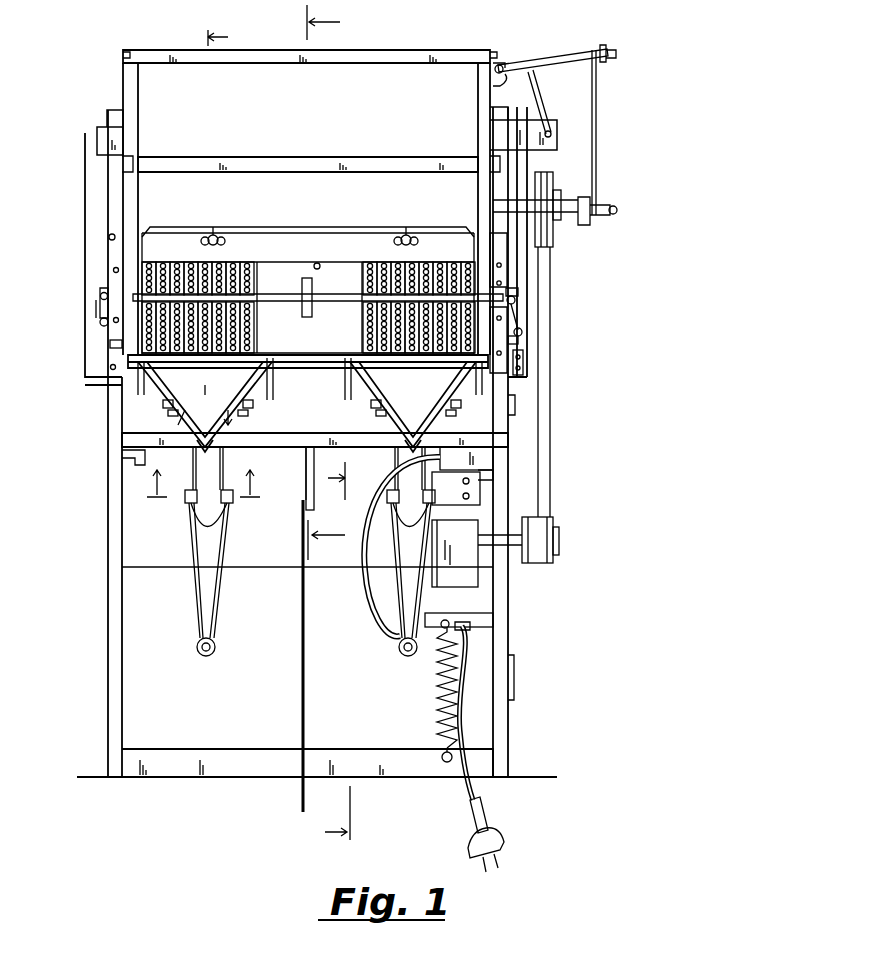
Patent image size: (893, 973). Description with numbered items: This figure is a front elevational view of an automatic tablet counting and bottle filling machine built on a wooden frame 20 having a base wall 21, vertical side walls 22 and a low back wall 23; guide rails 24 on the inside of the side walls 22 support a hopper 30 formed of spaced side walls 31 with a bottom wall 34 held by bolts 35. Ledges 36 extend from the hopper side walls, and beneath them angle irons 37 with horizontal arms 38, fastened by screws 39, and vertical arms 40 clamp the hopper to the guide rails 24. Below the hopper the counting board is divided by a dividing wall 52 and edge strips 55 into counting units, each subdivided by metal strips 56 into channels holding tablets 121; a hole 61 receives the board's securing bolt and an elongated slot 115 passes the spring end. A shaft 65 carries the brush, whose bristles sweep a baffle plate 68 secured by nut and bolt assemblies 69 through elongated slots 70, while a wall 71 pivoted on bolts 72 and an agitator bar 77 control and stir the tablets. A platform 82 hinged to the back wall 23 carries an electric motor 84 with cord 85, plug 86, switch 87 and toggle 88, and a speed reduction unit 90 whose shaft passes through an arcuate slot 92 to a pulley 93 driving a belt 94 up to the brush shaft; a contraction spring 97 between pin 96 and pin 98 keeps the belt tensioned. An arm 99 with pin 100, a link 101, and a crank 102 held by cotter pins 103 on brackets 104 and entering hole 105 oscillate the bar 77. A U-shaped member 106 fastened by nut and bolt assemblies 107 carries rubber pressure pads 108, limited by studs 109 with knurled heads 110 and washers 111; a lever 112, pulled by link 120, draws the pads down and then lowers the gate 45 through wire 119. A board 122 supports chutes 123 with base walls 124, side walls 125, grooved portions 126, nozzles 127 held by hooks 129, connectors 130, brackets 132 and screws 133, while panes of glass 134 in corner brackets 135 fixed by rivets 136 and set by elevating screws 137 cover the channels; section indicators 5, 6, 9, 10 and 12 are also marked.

The section line 5 is at (326, 281).
The section line 6 is at (221, 218).
The section line 9 is at (343, 651).
The section line 10 is at (203, 422).
The section line 12 is at (203, 493).
The frame 20 is at (99, 720).
The base wall 21 is at (180, 762).
The side walls 22 is at (108, 630).
The back wall 23 is at (125, 685).
The guide rails 24 is at (122, 460).
The hopper 30 is at (428, 40).
The side walls 31 is at (137, 58).
The bottom wall 34 is at (372, 160).
The bolts 35 is at (120, 165).
The ledges 36 is at (108, 247).
The angle irons 37 is at (490, 265).
The horizontal arms 38 is at (515, 378).
The screws 39 is at (108, 237).
The vertical arms 40 is at (512, 412).
The gate 45 is at (285, 360).
The dividing wall 52 is at (340, 268).
The edge strips 55 is at (110, 352).
The metal strips 56 is at (255, 352).
The hole 61 is at (315, 263).
The shaft 65 is at (558, 220).
The baffle plate 68 is at (332, 232).
The nut and bolt assemblies 69 is at (232, 235).
The elongated slots 70 is at (214, 230).
The wall 71 is at (363, 52).
The bolts 72 is at (123, 55).
The bar 77 is at (102, 133).
The platform 82 is at (490, 620).
The electric motor 84 is at (480, 452).
The electric cord 85 is at (470, 820).
The plug 86 is at (492, 842).
The switch 87 is at (490, 668).
The operating toggle 88 is at (514, 676).
The speed reduction unit 90 is at (480, 498).
The elongated arcuate slot 92 is at (500, 588).
The pulley 93 is at (553, 535).
The belt 94 is at (553, 465).
The pin 96 is at (446, 620).
The contraction spring 97 is at (440, 712).
The pin 98 is at (442, 758).
The arm 99 is at (585, 222).
The pin 100 is at (608, 212).
The link 101 is at (598, 95).
The crank 102 is at (560, 58).
The cotter pins 103 is at (604, 47).
The brackets 104 is at (496, 85).
The hole 105 is at (551, 133).
The U-shaped member 106 is at (325, 302).
The nut and bolt assemblies 107 is at (108, 345).
The pressure pads 108 is at (445, 270).
The studs 109 is at (100, 325).
The knurled heads 110 is at (98, 290).
The washers 111 is at (98, 298).
The lever 112 is at (304, 505).
The elongated slot 115 is at (314, 295).
The wire 119 is at (305, 480).
The link 120 is at (300, 688).
The tablets 121 is at (185, 262).
The board 122 is at (283, 447).
The chutes 123 is at (281, 394).
The base wall 124 is at (455, 380).
The side walls 125 is at (150, 385).
The grooved portion 126 is at (196, 460).
The nozzles 127 is at (220, 622).
The hooks 129 is at (185, 500).
The connector 130 is at (212, 448).
The brackets 132 is at (253, 404).
The screws 133 is at (248, 413).
The panes of glass 134 is at (270, 270).
The corner brackets 135 is at (102, 385).
The rivets 136 is at (530, 362).
The elevating screws 137 is at (120, 378).